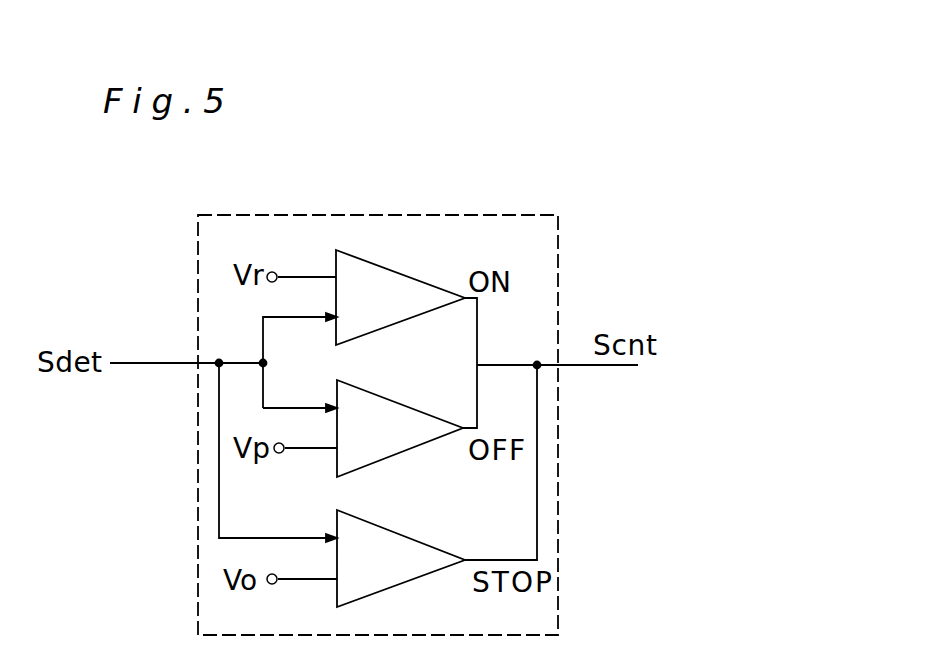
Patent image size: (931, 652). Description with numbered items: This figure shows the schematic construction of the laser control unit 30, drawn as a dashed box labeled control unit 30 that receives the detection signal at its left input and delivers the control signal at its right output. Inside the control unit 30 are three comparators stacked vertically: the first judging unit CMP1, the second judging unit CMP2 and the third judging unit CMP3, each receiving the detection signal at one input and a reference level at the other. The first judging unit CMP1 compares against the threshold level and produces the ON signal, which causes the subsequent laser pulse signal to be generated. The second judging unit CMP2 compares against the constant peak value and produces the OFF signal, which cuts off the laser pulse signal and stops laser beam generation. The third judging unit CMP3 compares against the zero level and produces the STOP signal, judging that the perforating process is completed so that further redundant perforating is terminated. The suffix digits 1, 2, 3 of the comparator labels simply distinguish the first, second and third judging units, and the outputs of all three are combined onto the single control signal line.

The laser control unit 30 is at (378, 391).
The first judging unit CMP1 is at (366, 297).
The second judging unit CMP2 is at (368, 428).
The third judging unit CMP3 is at (366, 558).
The first comparator CMP1 1 is at (366, 297).
The second comparator CMP2 2 is at (368, 428).
The third comparator CMP3 3 is at (366, 558).